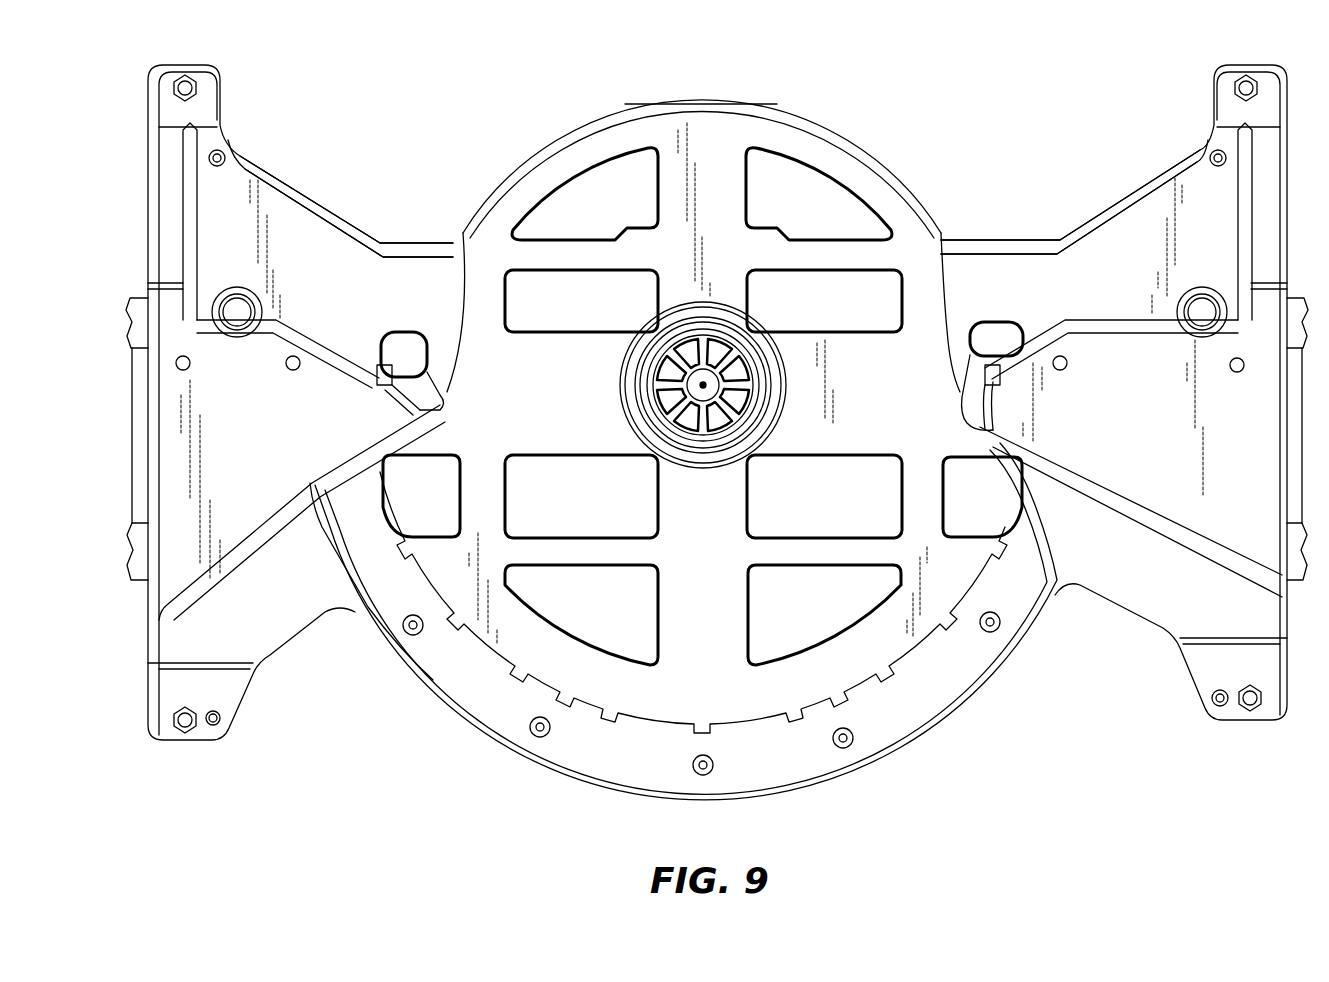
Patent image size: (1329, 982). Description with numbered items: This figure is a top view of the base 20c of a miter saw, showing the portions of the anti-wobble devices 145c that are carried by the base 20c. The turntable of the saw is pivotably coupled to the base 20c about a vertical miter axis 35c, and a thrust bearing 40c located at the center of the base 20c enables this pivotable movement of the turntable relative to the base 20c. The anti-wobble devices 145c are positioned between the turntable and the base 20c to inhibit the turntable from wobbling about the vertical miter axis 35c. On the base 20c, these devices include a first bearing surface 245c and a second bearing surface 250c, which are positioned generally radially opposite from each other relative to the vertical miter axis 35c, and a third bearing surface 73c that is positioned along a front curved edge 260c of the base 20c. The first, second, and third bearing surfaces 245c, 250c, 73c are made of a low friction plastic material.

The base 20c is at (924, 73).
The vertical miter axis 35c is at (657, 358).
The thrust bearing 40c is at (718, 322).
The first bearing surface 245c is at (453, 243).
The second bearing surface 250c is at (953, 242).
The front curved edge 260c is at (953, 697).
The third bearing surface 73c is at (873, 757).
The anti-wobble devices 145c is at (398, 763).